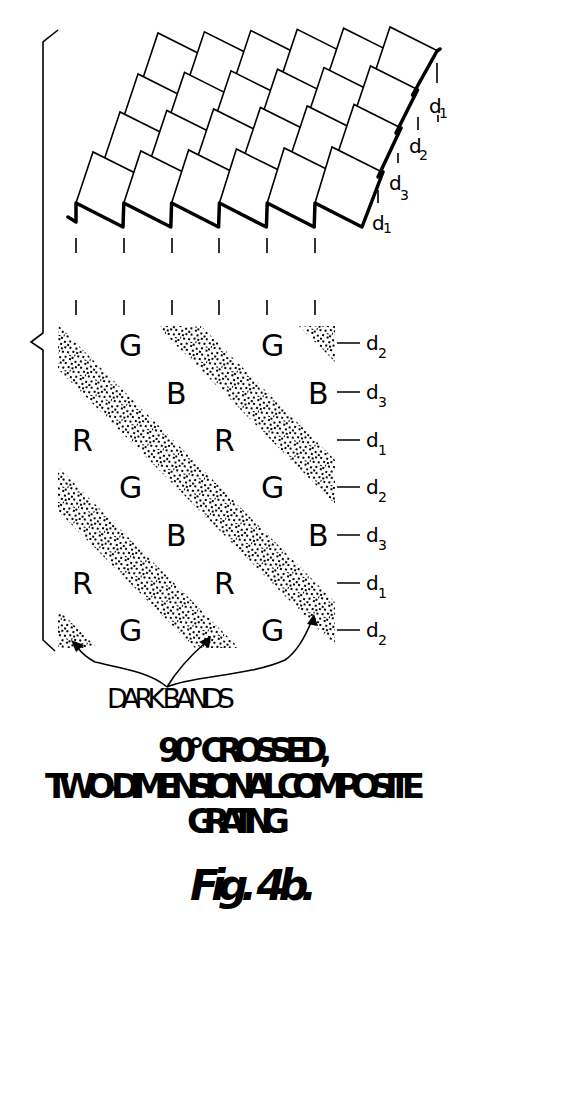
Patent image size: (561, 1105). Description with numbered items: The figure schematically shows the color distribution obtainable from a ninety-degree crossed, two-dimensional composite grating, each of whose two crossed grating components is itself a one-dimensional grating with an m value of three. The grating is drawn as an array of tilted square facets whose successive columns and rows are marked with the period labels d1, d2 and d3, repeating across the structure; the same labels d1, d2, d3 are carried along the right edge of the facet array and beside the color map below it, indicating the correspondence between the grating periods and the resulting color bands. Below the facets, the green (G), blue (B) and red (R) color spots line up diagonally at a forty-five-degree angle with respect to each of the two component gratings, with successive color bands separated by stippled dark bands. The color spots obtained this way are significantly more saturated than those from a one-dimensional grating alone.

The first grating period d1 is at (152, 276).
The second grating period d2 is at (200, 276).
The third grating period d3 is at (248, 276).